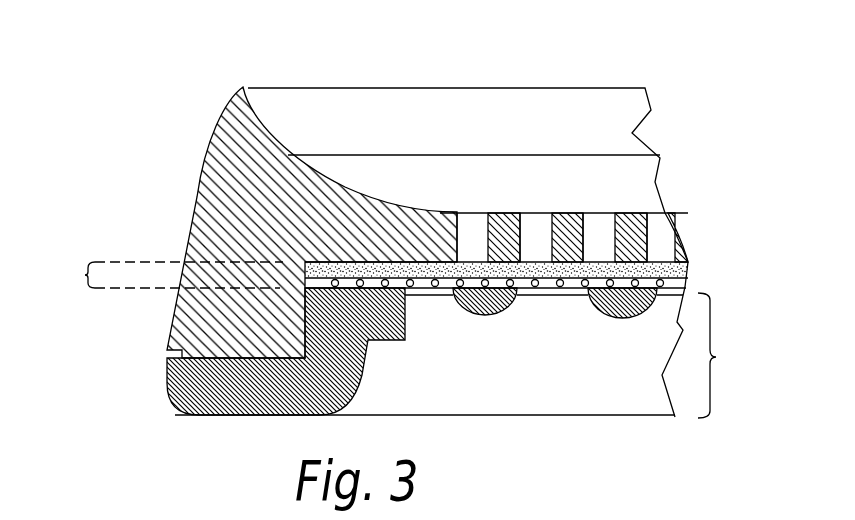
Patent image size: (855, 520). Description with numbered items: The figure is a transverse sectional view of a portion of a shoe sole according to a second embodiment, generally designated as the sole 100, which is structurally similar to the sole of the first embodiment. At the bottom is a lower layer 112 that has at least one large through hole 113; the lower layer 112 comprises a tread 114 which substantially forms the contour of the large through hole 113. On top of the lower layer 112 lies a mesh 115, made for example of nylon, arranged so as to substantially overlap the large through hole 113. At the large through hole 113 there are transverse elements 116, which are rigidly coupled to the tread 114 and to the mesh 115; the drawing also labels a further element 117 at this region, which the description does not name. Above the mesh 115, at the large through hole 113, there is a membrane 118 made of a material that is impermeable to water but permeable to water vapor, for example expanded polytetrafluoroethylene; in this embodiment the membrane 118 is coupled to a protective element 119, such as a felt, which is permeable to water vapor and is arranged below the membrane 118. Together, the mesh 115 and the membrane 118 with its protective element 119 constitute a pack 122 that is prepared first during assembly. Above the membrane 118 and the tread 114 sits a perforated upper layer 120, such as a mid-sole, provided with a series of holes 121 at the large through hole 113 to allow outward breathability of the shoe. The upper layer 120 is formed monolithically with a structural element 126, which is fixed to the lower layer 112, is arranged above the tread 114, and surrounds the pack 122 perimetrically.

The sole 100 is at (180, 130).
The lower layer 112 is at (734, 355).
The large through hole 113 is at (556, 382).
The tread 114 is at (230, 418).
The mesh 115 is at (553, 292).
The transverse elements 116 is at (670, 306).
The contact bumps 117 is at (488, 318).
The membrane 118 is at (662, 265).
The protective element 119 is at (689, 272).
The perforated upper layer 120 is at (507, 222).
The holes 121 is at (538, 216).
The pack 122 is at (85, 275).
The structural element 126 is at (184, 229).